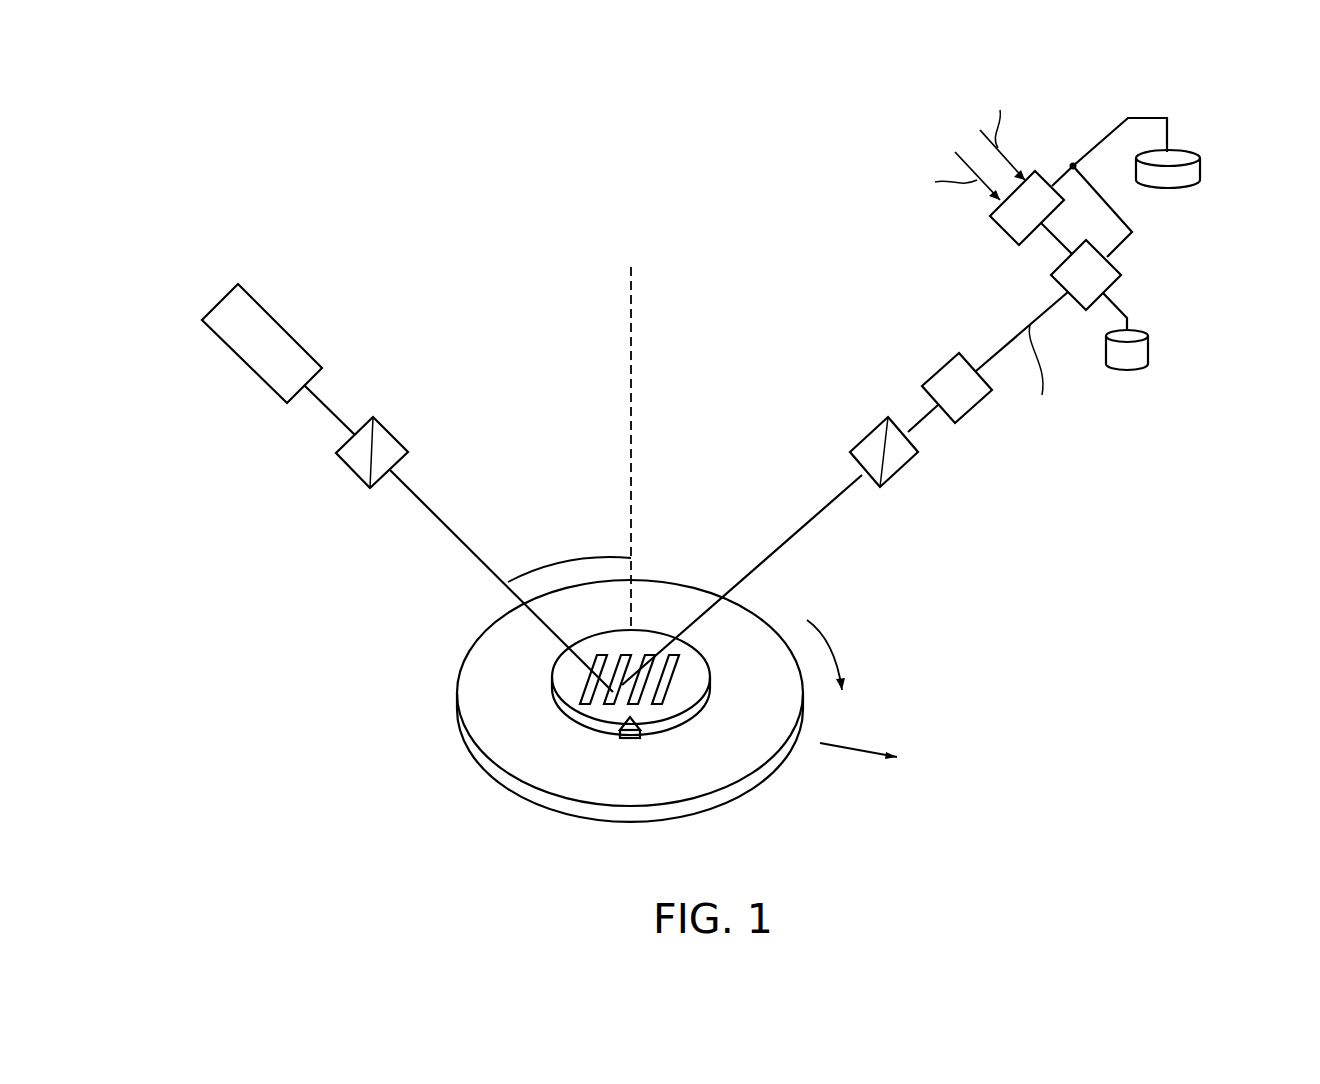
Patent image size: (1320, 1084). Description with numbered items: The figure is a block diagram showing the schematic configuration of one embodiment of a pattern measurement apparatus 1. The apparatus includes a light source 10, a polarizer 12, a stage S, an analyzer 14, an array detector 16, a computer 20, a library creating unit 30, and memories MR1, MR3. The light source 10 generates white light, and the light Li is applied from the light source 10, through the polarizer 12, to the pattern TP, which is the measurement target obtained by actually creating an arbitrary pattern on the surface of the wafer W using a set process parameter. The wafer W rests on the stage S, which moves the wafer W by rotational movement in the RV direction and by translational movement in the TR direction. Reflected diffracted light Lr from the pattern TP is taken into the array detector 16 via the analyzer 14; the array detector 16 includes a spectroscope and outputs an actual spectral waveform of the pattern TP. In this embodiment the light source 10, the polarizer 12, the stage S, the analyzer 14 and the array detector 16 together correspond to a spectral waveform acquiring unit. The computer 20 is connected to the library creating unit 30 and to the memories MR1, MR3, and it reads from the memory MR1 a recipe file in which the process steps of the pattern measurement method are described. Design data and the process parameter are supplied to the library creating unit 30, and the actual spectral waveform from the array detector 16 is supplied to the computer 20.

The pattern measurement apparatus 1 is at (508, 297).
The light source 10 is at (283, 323).
The polarizer 12 is at (390, 433).
The analyzer 14 is at (873, 425).
The array detector 16 is at (945, 360).
The computer 20 is at (1112, 288).
The library creating unit 30 is at (1000, 230).
The light Li is at (430, 507).
The reflected diffracted light Lr is at (793, 532).
The wafer W is at (673, 727).
The stage S is at (487, 762).
The pattern TP is at (612, 700).
The rotational movement direction RV is at (834, 672).
The translational movement direction TR is at (878, 760).
The memory MR1 is at (1147, 355).
The memory MR3 is at (1163, 193).